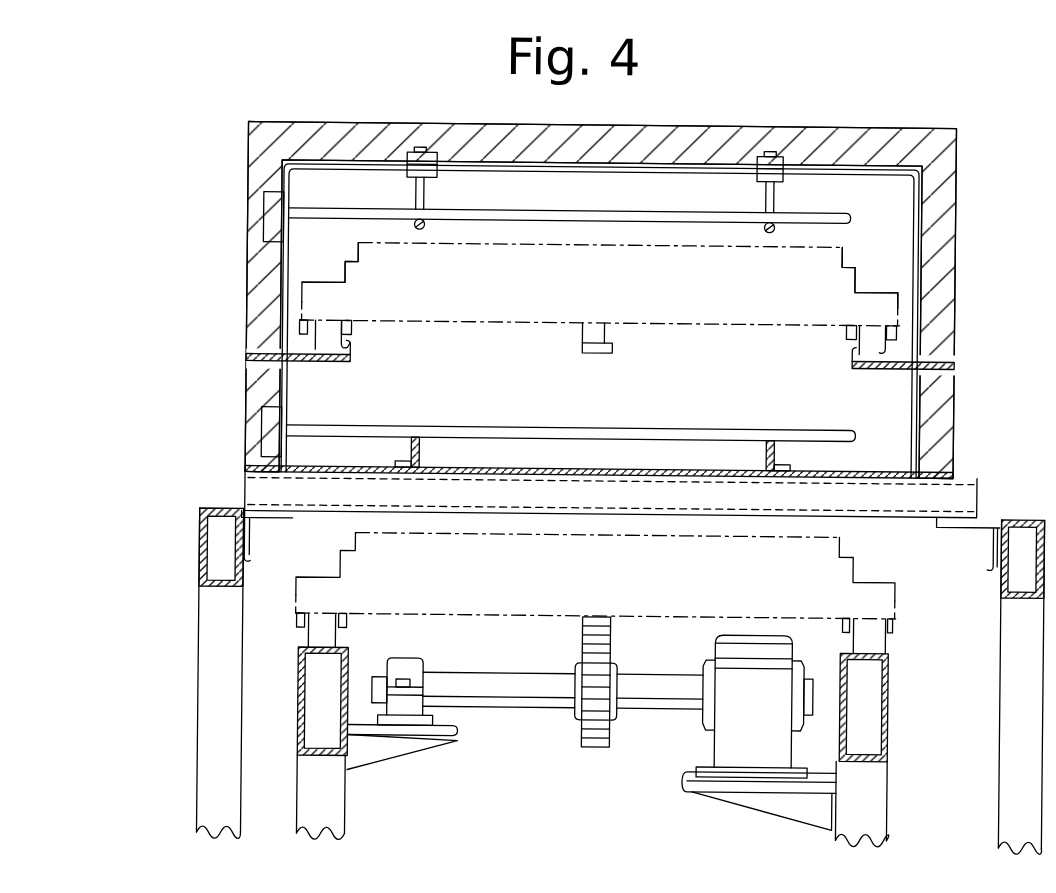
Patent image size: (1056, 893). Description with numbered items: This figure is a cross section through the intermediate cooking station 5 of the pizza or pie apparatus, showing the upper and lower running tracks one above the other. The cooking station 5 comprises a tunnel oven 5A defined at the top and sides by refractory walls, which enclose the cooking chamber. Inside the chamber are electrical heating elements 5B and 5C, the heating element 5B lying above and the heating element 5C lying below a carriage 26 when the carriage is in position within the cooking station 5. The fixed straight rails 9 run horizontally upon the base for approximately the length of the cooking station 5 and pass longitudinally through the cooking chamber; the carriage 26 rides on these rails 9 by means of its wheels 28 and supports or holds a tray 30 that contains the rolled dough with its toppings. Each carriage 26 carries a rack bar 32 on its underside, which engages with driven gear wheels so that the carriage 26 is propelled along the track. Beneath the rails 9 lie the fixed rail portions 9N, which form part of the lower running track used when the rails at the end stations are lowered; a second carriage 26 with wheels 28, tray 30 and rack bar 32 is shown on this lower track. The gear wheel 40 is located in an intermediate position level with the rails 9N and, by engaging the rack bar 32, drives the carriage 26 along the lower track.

The intermediate cooking station 5 is at (236, 260).
The tunnel oven 5A is at (867, 272).
The electrical heating element 5B is at (354, 210).
The electrical heating element 5C is at (636, 426).
The fixed straight rails 9 is at (329, 364).
The fixed portions of rails 9N is at (299, 686).
The carriage 26 is at (765, 298).
The wheels 28 is at (349, 354).
The tray 30 is at (840, 245).
The rack bar 32 is at (582, 355).
The gear wheel 40 is at (586, 752).